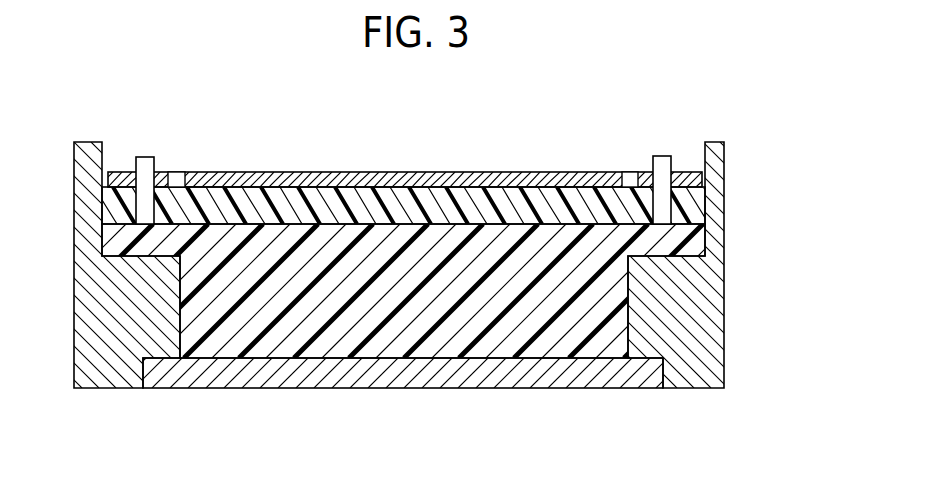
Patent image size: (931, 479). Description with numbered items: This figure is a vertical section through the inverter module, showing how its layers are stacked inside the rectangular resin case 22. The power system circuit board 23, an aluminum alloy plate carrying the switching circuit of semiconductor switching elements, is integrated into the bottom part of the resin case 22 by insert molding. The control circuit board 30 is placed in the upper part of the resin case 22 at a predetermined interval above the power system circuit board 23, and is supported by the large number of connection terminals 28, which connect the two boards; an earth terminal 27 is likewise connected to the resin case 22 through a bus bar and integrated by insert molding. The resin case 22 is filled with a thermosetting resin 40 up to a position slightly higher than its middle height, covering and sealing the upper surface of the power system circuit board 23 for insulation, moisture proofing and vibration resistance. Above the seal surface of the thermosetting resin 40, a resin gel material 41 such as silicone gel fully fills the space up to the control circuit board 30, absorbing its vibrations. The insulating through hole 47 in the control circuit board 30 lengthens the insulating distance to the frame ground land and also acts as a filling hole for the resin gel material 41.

The resin case 22 is at (707, 289).
The power system circuit board 23 is at (220, 383).
The earth terminal 27 is at (148, 155).
The connection terminal 28 is at (660, 155).
The control circuit board 30 is at (323, 171).
The thermosetting resin 40 is at (347, 332).
The resin gel material 41 is at (473, 192).
The insulating through hole 47 is at (177, 171).